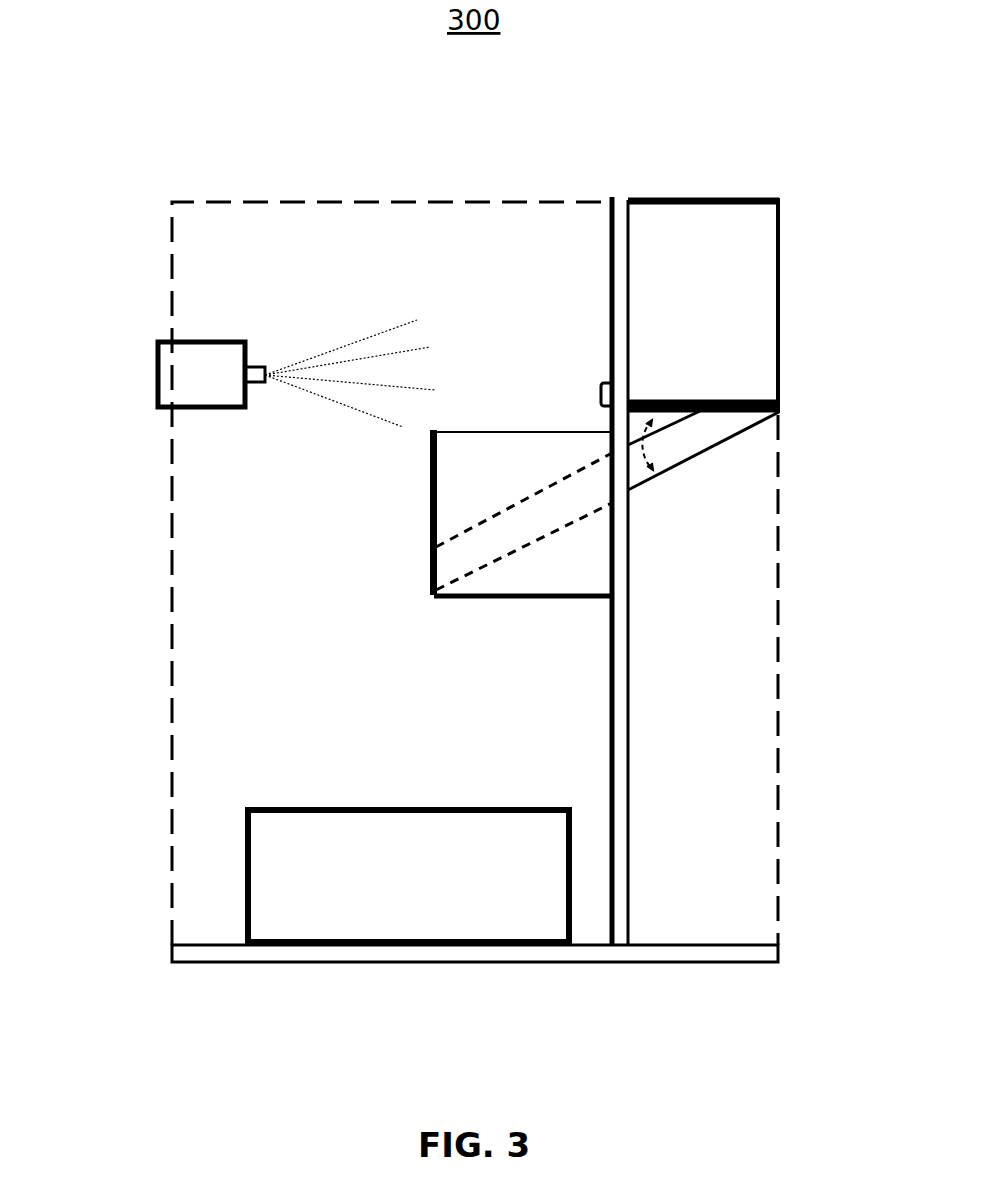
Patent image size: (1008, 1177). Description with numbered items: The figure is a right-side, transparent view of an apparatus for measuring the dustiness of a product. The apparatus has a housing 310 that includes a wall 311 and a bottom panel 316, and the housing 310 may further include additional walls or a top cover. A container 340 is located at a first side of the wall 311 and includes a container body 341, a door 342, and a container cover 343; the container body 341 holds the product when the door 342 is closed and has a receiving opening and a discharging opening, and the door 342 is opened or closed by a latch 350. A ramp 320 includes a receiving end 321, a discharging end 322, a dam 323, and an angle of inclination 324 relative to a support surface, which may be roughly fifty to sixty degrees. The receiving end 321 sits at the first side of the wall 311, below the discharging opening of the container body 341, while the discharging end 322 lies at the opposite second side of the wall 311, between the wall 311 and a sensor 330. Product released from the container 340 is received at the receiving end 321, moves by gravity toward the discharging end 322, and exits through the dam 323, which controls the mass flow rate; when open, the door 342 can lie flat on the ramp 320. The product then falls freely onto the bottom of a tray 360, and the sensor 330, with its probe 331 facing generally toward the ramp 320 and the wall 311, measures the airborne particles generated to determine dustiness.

The housing 310 is at (185, 160).
The wall 311 is at (610, 197).
The bottom panel 316 is at (372, 950).
The ramp 320 is at (482, 505).
The receiving end 321 is at (742, 475).
The discharging end 322 is at (445, 628).
The dam 323 is at (430, 517).
The angle of inclination 324 is at (637, 462).
The sensor 330 is at (243, 328).
The probe 331 is at (340, 346).
The container 340 is at (757, 232).
The container body 341 is at (705, 246).
The door 342 is at (745, 398).
The container cover 343 is at (742, 195).
The latch 350 is at (602, 390).
The tray 360 is at (408, 876).